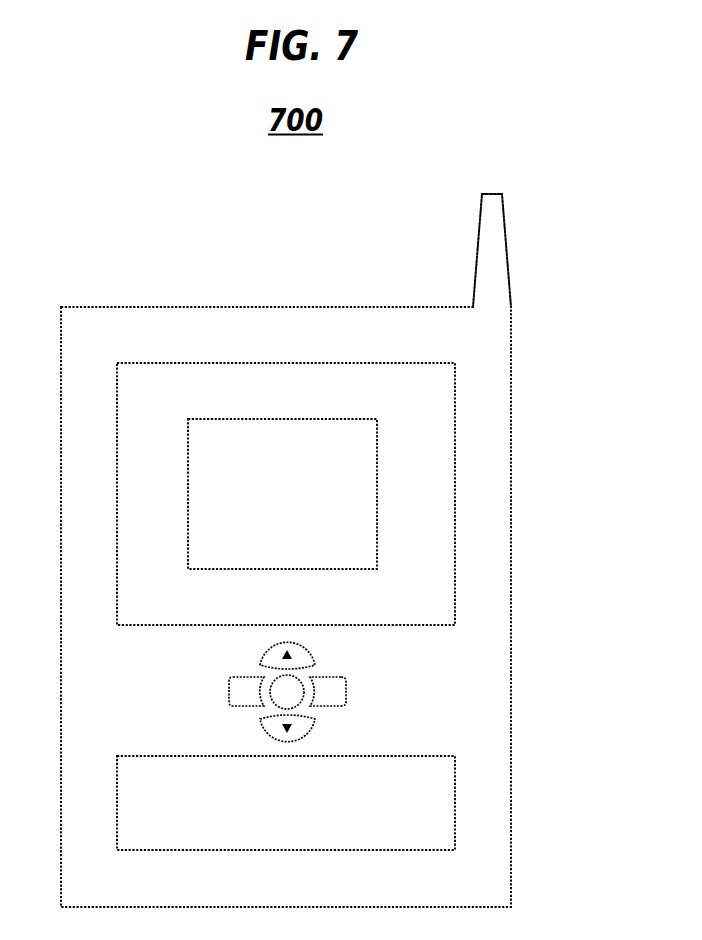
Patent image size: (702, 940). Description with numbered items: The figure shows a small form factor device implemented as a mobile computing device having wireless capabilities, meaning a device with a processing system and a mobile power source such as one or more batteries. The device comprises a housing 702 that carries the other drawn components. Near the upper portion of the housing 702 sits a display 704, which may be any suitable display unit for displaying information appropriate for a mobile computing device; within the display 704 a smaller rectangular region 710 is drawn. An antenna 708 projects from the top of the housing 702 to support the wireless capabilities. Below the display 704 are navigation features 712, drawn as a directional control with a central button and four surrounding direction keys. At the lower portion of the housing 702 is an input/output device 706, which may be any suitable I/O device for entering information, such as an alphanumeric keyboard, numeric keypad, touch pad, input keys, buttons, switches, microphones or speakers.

The housing 702 is at (513, 640).
The display 704 is at (455, 424).
The input/output (I/O) device 706 is at (455, 809).
The antenna 708 is at (505, 237).
The display window / image region 710 is at (188, 510).
The navigation features 712 is at (353, 673).